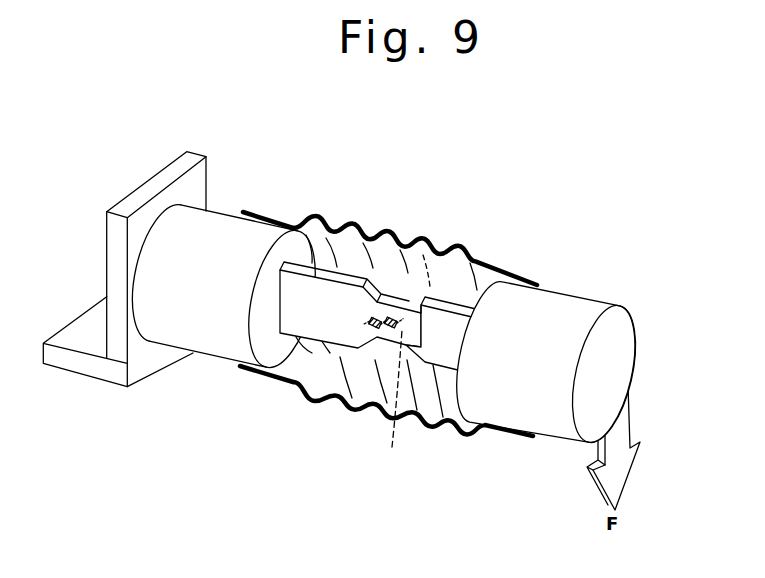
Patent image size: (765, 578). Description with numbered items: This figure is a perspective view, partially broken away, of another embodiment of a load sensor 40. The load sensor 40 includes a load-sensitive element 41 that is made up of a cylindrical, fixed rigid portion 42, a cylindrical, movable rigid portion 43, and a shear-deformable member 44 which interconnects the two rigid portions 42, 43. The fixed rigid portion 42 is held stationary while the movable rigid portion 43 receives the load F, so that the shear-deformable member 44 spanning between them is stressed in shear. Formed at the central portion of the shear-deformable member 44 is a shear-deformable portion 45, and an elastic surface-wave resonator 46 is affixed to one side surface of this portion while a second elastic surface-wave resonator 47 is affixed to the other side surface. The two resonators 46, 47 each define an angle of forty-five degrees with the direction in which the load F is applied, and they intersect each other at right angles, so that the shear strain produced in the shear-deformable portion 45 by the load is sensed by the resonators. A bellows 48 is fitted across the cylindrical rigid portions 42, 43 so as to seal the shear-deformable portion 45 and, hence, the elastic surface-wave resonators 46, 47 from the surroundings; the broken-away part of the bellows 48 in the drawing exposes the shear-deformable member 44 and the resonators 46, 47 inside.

The load sensor 40 is at (641, 253).
The load-sensitive element 41 is at (563, 293).
The cylindrical fixed rigid portion 42 is at (206, 343).
The cylindrical movable rigid portion 43 is at (555, 423).
The shear-deformable member 44 is at (320, 333).
The shear-deformable portion 45 is at (421, 265).
The elastic surface-wave resonator 46 is at (392, 345).
The elastic surface-wave resonator 47 is at (392, 401).
The bellows 48 is at (468, 247).